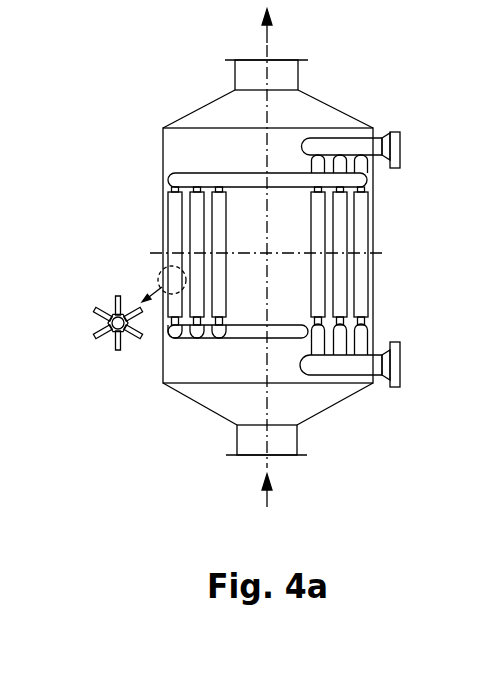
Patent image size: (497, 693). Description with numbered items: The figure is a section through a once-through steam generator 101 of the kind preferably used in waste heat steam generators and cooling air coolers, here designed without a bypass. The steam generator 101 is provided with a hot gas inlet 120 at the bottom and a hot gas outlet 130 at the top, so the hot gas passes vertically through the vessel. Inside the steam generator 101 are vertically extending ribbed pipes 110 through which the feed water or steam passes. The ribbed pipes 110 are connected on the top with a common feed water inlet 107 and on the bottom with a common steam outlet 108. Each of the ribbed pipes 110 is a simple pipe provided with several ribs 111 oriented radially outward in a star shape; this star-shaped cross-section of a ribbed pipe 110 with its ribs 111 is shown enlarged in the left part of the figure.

The steam generator 101 is at (103, 140).
The feed water inlet 107 is at (396, 142).
The steam outlet 108 is at (396, 378).
The ribbed pipes 110 is at (198, 224).
The ribs 111 is at (113, 352).
The hot gas inlet 120 is at (176, 456).
The hot gas outlet 130 is at (175, 61).